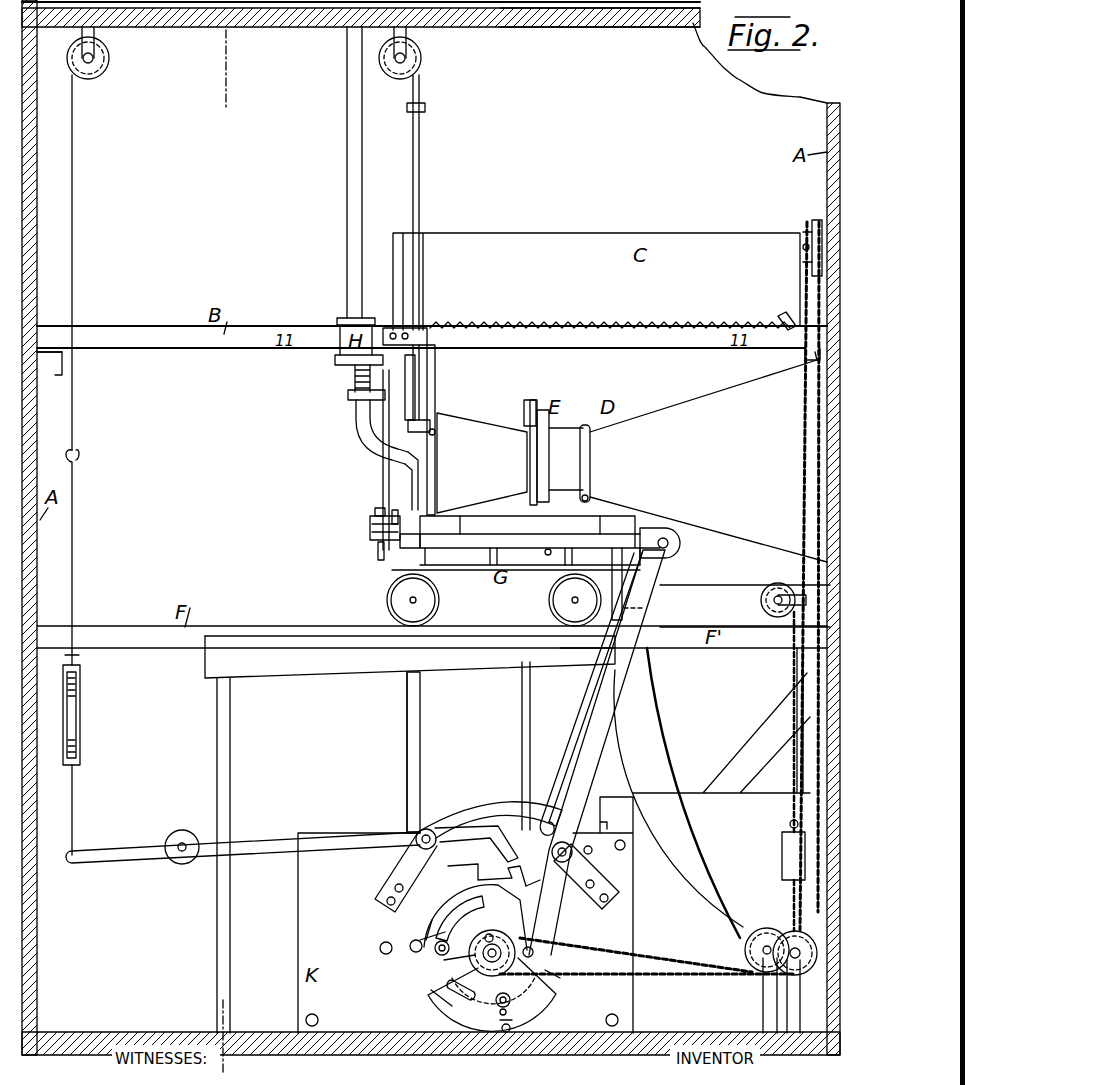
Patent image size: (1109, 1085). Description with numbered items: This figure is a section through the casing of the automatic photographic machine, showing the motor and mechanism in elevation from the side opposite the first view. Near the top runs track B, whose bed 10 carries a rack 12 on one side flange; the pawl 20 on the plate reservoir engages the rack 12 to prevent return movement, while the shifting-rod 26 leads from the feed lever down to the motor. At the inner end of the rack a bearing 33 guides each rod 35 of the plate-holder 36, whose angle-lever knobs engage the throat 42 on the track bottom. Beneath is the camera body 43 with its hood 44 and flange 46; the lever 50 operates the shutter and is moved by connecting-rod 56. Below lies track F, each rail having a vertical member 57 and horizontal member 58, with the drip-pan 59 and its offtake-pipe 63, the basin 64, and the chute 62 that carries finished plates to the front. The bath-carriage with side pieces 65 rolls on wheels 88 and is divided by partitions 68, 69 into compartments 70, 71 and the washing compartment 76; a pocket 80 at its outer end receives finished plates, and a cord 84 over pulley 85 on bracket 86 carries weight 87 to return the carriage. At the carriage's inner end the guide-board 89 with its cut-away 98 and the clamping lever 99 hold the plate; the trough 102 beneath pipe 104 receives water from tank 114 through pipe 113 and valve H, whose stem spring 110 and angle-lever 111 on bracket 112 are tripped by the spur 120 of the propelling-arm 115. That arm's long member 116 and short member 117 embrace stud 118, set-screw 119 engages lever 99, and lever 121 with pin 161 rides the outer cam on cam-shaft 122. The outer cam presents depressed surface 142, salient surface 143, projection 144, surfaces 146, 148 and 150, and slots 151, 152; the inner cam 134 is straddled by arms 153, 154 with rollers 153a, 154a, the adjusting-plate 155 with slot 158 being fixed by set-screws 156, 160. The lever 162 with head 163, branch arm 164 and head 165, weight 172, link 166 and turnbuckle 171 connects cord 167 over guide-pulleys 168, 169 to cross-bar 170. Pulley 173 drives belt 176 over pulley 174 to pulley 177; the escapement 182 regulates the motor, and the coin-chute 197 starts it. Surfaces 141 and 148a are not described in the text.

The bed 10 is at (162, 358).
The rack 12 is at (592, 324).
The pawl 20 is at (786, 316).
The shifting-rod 26 is at (412, 438).
The guide or bearing 33 is at (421, 332).
The rod 35 is at (414, 146).
The plate-holder 36 is at (432, 420).
The throat 42 is at (424, 372).
The body portion of the camera 43 is at (569, 463).
The hood 44 is at (506, 433).
The flange 46 is at (708, 457).
The lever 50 is at (530, 402).
The connecting-rod 56 is at (525, 692).
The vertical section or member 57 is at (530, 629).
The horizontal member 58 is at (542, 652).
The pan 59 is at (410, 657).
The chute 62 is at (662, 758).
The offtake-pipe 63 is at (222, 790).
The basin 64 is at (333, 636).
The side pieces 65 is at (437, 596).
The partition 68 is at (473, 522).
The partition 69 is at (582, 536).
The compartment 70 is at (530, 547).
The compartment 71 is at (575, 547).
The washing compartment 76 is at (602, 583).
The chute or pocket 80 is at (630, 576).
The cord, rope, or chain 84 is at (798, 780).
The pulley 85 is at (782, 592).
The bracket 86 is at (792, 607).
The weight 87 is at (781, 847).
The wheels 88 is at (388, 592).
The guide-board 89 is at (410, 458).
The cut-away 98 is at (396, 526).
The lever 99 is at (372, 527).
The trough 102 is at (540, 529).
The pipe 104 is at (358, 440).
The spring 110 is at (355, 376).
The angle-lever 111 is at (346, 397).
The bracket 112 is at (372, 341).
The pipe 113 is at (347, 165).
The tank 114 is at (530, 10).
The propelling-arm 115 is at (641, 540).
The upper long member 116 is at (382, 548).
The lower short member 117 is at (383, 480).
The stud 118 is at (422, 532).
The set-screw 119 is at (378, 512).
The spur 120 is at (548, 556).
The lever 121 is at (606, 706).
The cam-shaft 122 is at (440, 955).
The cam 134 is at (466, 880).
The hub 141 is at (492, 952).
The depressed surface 142 is at (463, 896).
The salient surface 143 is at (545, 1006).
The projection 144 is at (560, 978).
The surface or shoulder 146 is at (647, 956).
The medium depressed surface 148 is at (535, 910).
The plate edge 148a is at (539, 875).
The shoulder or depressed surface 150 is at (516, 893).
The slot 151 is at (452, 942).
The slot 152 is at (467, 983).
The cam-arm 153 is at (434, 916).
The friction-roller 153a is at (416, 943).
The cam-arm 154 is at (497, 1034).
The friction-roller 154a is at (536, 1028).
The adjusting-plate 155 is at (504, 996).
The set-screw 156 is at (500, 1006).
The slot 158 is at (446, 1012).
The set-screw 160 is at (389, 951).
The pin 161 is at (545, 956).
The lever 162 is at (243, 847).
The head 163 is at (552, 851).
The branch arm 164 is at (490, 810).
The head 165 is at (552, 807).
The link 166 is at (80, 580).
The cord 167 is at (78, 280).
The guide-pulley 168 is at (100, 58).
The guide-pulley 169 is at (411, 55).
The cross-bar 170 is at (426, 108).
The turnbuckle 171 is at (80, 734).
The weight 172 is at (181, 841).
The pulley 173 is at (489, 936).
The pulley 174 is at (748, 952).
The chain or belt 176 is at (806, 500).
The pulley 177 is at (812, 228).
The escapement 182 is at (607, 821).
The coin-chute 197 is at (756, 765).